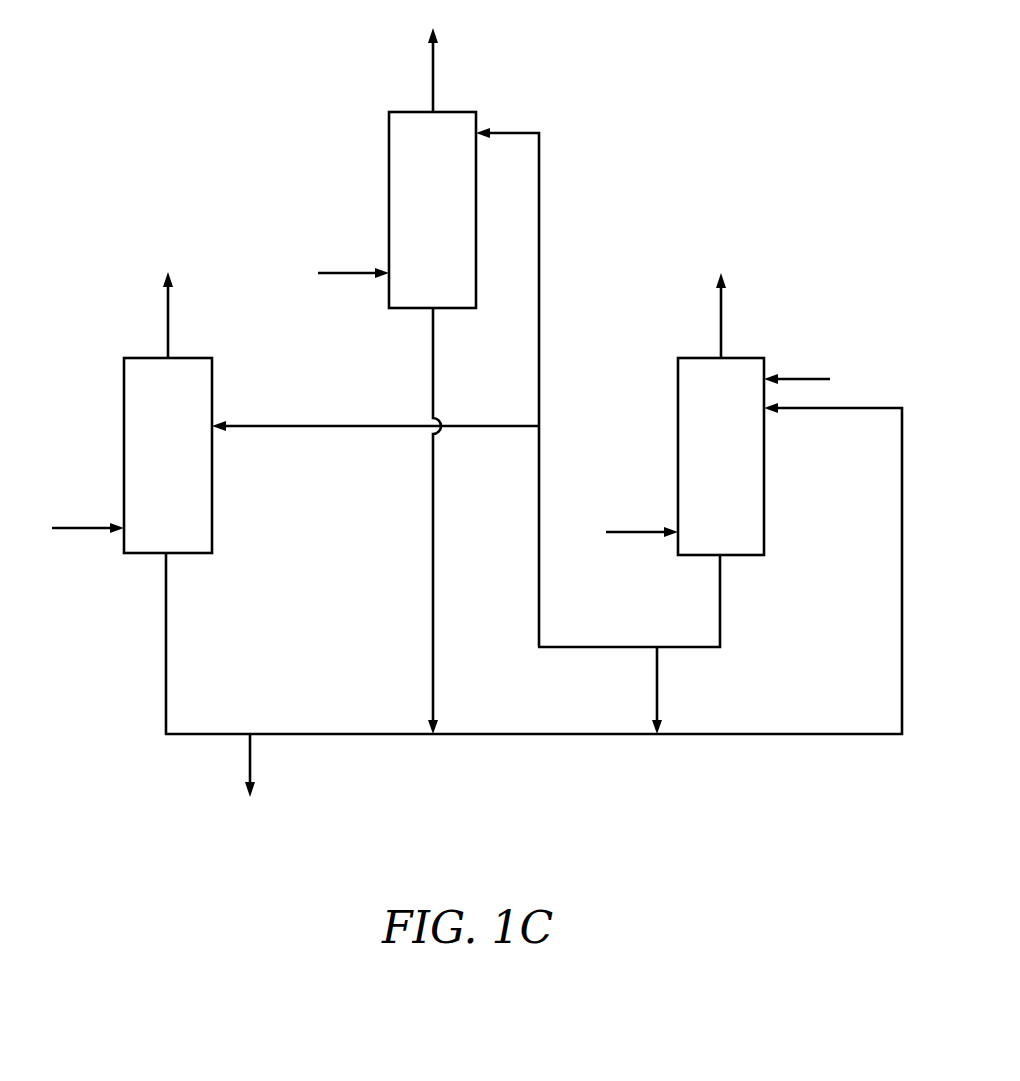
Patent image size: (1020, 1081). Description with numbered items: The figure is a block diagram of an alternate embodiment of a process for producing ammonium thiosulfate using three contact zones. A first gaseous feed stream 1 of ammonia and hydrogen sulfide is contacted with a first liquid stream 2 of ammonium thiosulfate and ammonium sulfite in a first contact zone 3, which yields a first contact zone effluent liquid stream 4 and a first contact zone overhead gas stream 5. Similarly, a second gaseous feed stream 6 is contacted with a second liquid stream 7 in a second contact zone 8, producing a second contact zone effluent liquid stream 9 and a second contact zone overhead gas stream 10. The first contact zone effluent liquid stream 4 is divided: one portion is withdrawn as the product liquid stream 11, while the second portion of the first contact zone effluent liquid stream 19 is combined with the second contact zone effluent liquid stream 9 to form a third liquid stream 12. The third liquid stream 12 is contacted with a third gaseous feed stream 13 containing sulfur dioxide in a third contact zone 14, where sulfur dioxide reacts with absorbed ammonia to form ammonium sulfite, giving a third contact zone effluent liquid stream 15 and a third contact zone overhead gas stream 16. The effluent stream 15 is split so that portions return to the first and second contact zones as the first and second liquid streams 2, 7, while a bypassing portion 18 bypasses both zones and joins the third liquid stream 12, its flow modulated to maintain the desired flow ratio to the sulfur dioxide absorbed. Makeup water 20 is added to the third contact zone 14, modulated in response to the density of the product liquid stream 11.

The first gaseous feed stream 1 is at (83, 527).
The first liquid stream 2 is at (252, 423).
The first contact zone 3 is at (124, 403).
The first contact zone effluent liquid stream 4 is at (166, 664).
The first contact zone overhead gas stream 5 is at (167, 320).
The second gaseous feed stream 6 is at (348, 269).
The second liquid stream 7 is at (539, 175).
The second contact zone 8 is at (476, 116).
The second contact zone effluent liquid stream 9 is at (434, 383).
The second contact zone overhead gas stream 10 is at (432, 82).
The product liquid stream 11 is at (250, 757).
The third liquid stream 12 is at (515, 734).
The third gaseous feed stream 13 is at (634, 531).
The third contact zone 14 is at (678, 395).
The third contact zone effluent liquid stream 15 is at (720, 624).
The third contact zone overhead gas stream 16 is at (719, 333).
The bypassing portion 18 is at (658, 700).
The second portion of the first contact zone effluent liquid stream 19 is at (318, 734).
The makeup water 20 is at (800, 379).